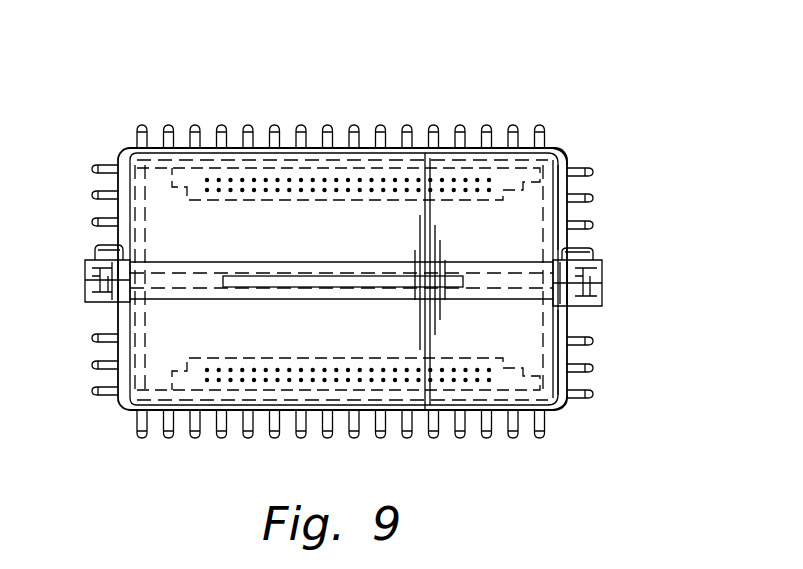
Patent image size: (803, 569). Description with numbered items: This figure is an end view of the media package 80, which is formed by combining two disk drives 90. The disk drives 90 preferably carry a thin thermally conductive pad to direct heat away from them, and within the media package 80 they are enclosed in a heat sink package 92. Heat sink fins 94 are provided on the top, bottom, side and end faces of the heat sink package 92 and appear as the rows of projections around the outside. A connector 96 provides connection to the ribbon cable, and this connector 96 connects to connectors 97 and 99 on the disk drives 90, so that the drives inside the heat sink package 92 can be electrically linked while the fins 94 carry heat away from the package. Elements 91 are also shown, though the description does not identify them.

The media package 80 is at (577, 121).
The disk drive 90 is at (565, 237).
The housing half 91 is at (565, 156).
The heat sink package 92 is at (313, 125).
The heat sink fins 94 is at (406, 124).
The connector 96 is at (235, 287).
The connector 97 is at (560, 185).
The connector 99 is at (575, 355).